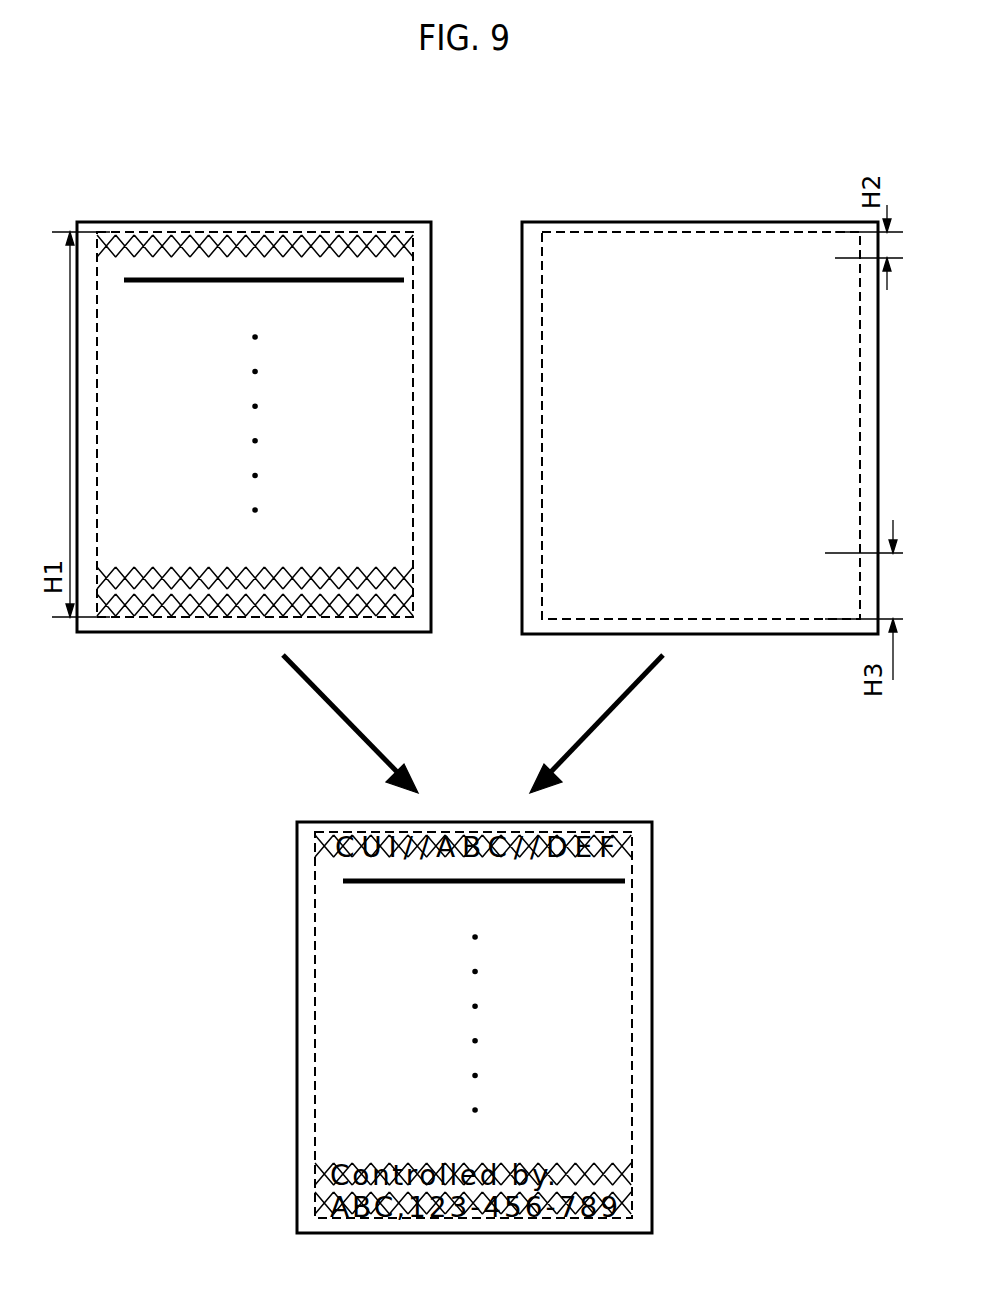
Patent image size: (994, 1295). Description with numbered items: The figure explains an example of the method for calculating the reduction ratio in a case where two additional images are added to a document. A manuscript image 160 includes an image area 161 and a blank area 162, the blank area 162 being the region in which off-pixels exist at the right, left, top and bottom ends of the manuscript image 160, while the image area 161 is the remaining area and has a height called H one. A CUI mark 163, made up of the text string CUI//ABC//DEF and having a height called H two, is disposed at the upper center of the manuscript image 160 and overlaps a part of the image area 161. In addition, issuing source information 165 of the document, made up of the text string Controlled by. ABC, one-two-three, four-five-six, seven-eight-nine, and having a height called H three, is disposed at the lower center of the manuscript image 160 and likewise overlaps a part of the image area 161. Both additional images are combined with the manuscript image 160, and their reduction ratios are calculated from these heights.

The manuscript image 160 is at (432, 292).
The image area 161 is at (413, 410).
The blank area 162 is at (418, 502).
The CUI mark 163 is at (556, 240).
The issuing source information 165 is at (548, 580).